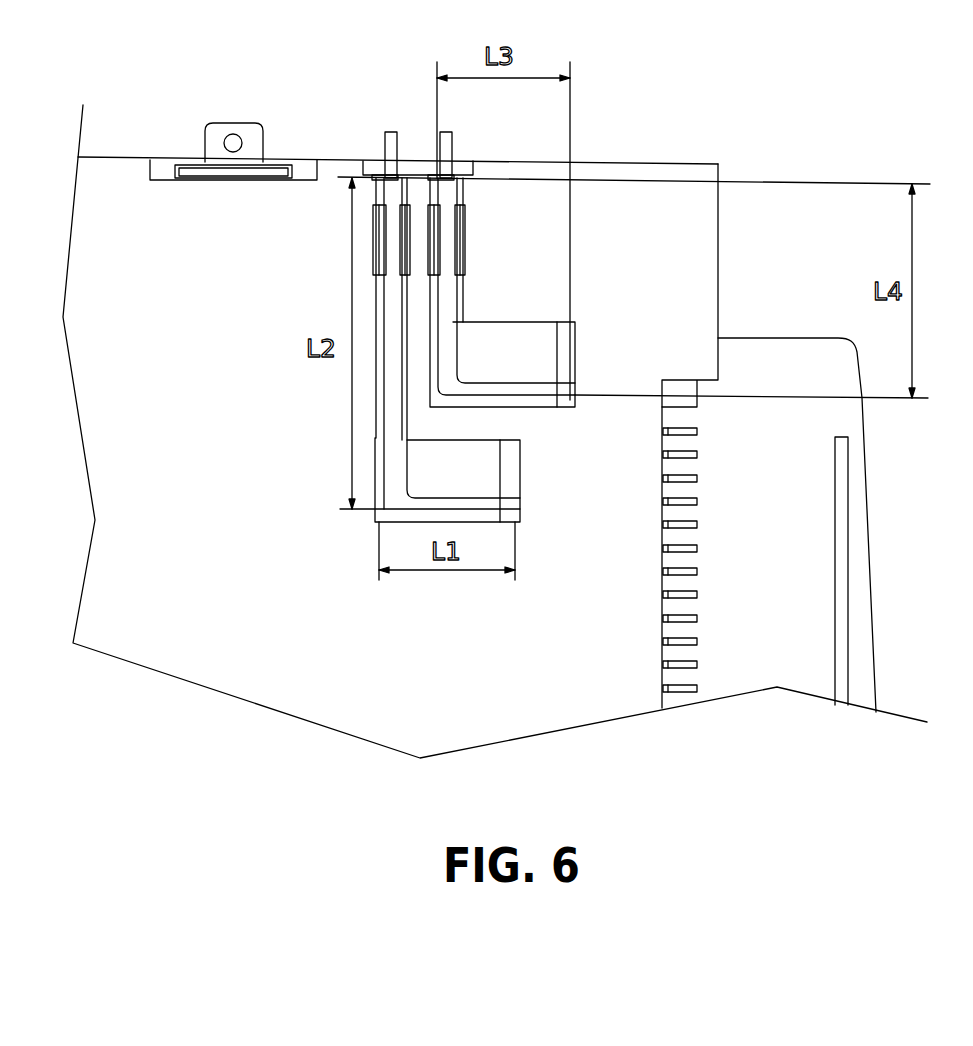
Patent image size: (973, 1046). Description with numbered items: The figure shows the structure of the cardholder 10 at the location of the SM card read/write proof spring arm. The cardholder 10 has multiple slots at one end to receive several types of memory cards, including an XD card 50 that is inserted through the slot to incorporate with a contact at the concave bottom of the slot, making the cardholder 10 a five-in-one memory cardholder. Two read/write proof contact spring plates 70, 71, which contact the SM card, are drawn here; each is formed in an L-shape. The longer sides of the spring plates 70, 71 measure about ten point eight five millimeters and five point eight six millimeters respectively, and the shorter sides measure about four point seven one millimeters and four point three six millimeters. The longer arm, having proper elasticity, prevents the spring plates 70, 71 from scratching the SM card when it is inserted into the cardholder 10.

The cardholder 10 is at (638, 543).
The XD card 50 is at (810, 495).
The R/W proof contact spring plate 70 is at (388, 243).
The R/W proof contact spring plate 71 is at (396, 170).